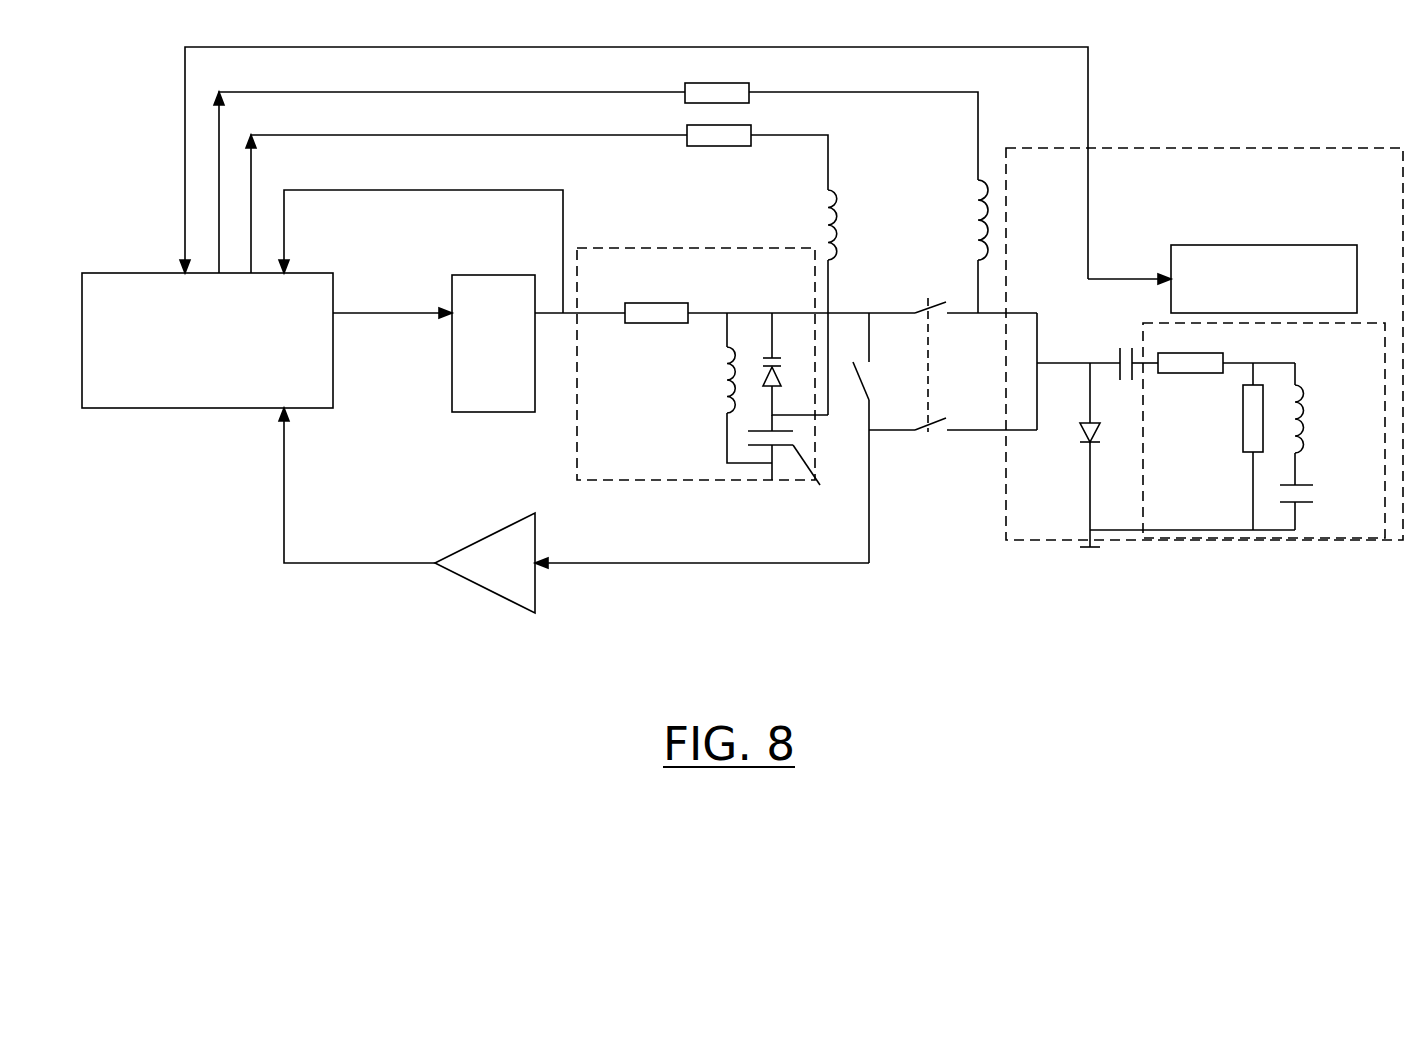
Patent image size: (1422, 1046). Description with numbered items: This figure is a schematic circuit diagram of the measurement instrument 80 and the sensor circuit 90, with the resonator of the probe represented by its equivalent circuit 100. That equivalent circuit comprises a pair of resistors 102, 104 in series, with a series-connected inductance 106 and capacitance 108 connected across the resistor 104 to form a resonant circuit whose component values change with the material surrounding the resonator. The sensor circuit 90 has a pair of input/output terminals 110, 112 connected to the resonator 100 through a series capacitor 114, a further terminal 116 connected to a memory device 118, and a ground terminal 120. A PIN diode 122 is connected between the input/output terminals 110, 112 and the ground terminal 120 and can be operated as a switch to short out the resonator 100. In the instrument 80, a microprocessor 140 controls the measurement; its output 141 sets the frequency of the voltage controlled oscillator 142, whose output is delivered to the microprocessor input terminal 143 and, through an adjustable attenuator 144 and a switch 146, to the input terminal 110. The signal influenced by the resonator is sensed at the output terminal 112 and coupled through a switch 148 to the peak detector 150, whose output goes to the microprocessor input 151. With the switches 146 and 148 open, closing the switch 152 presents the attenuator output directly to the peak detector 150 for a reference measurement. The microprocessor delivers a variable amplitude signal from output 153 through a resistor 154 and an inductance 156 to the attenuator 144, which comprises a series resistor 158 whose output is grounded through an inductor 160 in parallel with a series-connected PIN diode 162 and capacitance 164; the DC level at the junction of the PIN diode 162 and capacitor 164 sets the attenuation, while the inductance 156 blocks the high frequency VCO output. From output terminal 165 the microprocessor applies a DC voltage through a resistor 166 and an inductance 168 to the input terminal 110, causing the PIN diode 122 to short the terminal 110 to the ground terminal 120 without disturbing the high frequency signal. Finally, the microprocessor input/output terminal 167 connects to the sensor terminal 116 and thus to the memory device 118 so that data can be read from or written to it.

The measurement instrument 80 is at (395, 466).
The sensor circuit 90 is at (1204, 344).
The resonator equivalent circuit 100 is at (1264, 430).
The resistor 102 is at (1226, 378).
The resistor 104 is at (1229, 446).
The inductance 106 is at (1319, 424).
The capacitance 108 is at (1318, 505).
The input/output terminal 110 is at (1028, 357).
The input/output terminal 112 is at (1064, 414).
The series capacitor 114 is at (1116, 356).
The further terminal 116 is at (1104, 223).
The memory device 118 is at (1264, 279).
The ground terminal 120 is at (1169, 529).
The PIN diode 122 is at (1110, 455).
The microprocessor 140 is at (207, 340).
The microprocessor output 141 is at (372, 316).
The voltage controlled oscillator 142 is at (538, 343).
The microprocessor input terminal 143 is at (421, 251).
The adjustable attenuator 144 is at (746, 381).
The switch 146 is at (971, 353).
The switch 148 is at (953, 441).
The peak detector 150 is at (641, 576).
The microprocessor input 151 is at (350, 469).
The switch 152 is at (878, 438).
The microprocessor output 153 is at (463, 219).
The resistor 154 is at (757, 157).
The inductance 156 is at (851, 302).
The series resistor 158 is at (770, 325).
The inductor 160 is at (727, 388).
The PIN diode 162 is at (795, 364).
The capacitance 164 is at (790, 464).
The microprocessor output terminal 165 is at (441, 198).
The resistor 166 is at (831, 123).
The microprocessor input/output terminal 167 is at (619, 174).
The inductance 168 is at (960, 246).